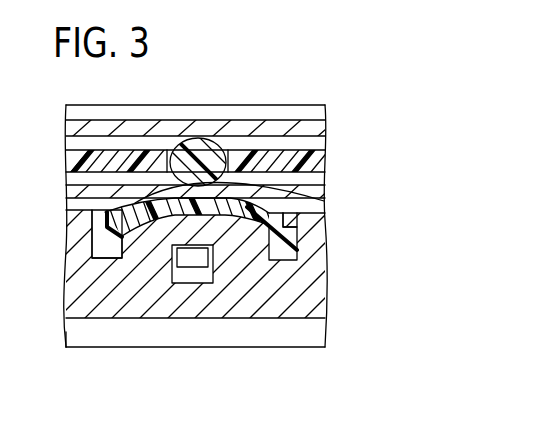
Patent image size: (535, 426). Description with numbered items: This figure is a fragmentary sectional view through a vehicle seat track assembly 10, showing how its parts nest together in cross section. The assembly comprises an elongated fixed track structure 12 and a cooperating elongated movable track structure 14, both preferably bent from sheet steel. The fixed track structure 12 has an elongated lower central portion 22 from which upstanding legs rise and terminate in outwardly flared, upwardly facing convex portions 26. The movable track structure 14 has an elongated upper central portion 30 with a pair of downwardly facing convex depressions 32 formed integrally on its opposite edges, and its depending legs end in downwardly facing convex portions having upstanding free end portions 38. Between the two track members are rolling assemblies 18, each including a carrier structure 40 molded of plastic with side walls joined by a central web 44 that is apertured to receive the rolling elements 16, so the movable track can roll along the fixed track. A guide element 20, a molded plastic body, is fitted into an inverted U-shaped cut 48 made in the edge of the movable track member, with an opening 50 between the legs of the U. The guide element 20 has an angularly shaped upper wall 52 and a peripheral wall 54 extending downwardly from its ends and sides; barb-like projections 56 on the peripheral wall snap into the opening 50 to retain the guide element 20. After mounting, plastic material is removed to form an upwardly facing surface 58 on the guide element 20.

The vehicle seat track assembly 10 is at (348, 101).
The fixed track structure 12 is at (95, 353).
The movable track structure 14 is at (62, 110).
The rolling elements 16 is at (196, 163).
The rolling assemblies 18 is at (331, 164).
The guide elements 20 is at (293, 214).
The lower central portion 22 is at (225, 349).
The upwardly facing convex portions 26 is at (72, 188).
The upper central portion 30 is at (123, 113).
The downwardly facing convex depressions 32 is at (73, 128).
The upstanding free end portions 38 is at (90, 281).
The carrier structure 40 is at (331, 145).
The central web 44 is at (70, 162).
The inverted U-shaped cut 48 is at (297, 272).
The opening 50 is at (215, 272).
The upper wall 52 is at (265, 196).
The peripheral wall 54 is at (105, 250).
The barb-like projections 56 is at (198, 252).
The upwardly facing surface 58 is at (68, 210).